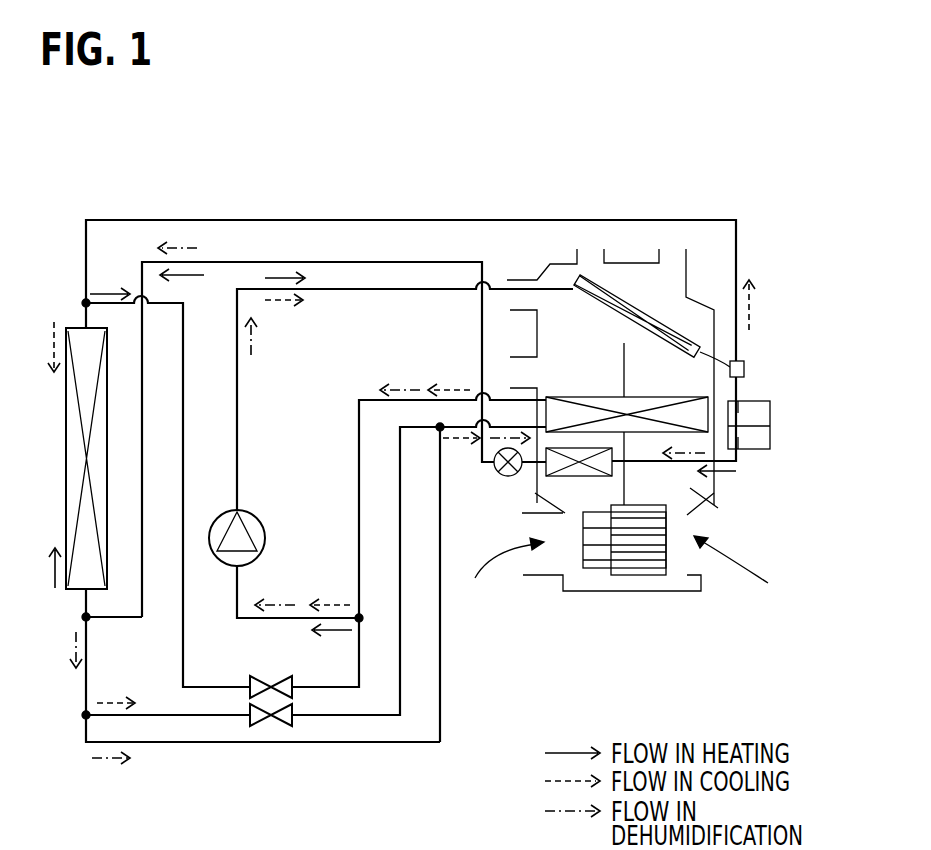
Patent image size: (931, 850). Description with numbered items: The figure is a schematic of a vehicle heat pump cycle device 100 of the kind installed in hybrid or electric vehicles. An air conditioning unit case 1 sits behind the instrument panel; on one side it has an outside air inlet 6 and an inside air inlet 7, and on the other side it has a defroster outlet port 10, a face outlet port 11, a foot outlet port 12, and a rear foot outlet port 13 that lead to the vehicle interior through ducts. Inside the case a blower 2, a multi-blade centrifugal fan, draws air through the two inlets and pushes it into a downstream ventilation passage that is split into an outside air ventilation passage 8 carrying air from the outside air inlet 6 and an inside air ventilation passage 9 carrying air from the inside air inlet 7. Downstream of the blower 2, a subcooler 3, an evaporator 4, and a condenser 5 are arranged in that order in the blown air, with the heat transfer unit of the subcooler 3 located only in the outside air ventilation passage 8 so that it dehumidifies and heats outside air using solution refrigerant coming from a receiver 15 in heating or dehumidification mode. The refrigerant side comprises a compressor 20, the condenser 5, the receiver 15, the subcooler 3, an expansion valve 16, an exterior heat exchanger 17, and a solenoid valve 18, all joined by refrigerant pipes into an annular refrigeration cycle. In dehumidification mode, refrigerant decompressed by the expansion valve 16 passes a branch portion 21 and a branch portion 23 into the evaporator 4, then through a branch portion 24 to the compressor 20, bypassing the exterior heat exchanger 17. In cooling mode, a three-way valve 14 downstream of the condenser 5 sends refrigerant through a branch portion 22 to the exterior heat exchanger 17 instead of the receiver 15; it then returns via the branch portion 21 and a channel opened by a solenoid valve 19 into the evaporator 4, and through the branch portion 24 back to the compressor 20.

The heat pump cycle device 100 is at (424, 216).
The air conditioning unit case 1 is at (626, 603).
The blower 2 is at (652, 577).
The subcooler 3 is at (563, 477).
The evaporator 4 is at (708, 405).
The condenser 5 is at (668, 326).
The outside air inlet 6 is at (530, 560).
The inside air inlet 7 is at (693, 558).
The outside air ventilation passage 8 is at (533, 499).
The inside air ventilation passage 9 is at (718, 508).
The defroster outlet port 10 is at (513, 373).
The face outlet port 11 is at (507, 280).
The foot outlet port 12 is at (592, 244).
The rear foot outlet port 13 is at (674, 244).
The three-way valve 14 is at (745, 369).
The receiver 15 is at (770, 436).
The expansion valve 16 is at (496, 472).
The exterior heat exchanger 17 is at (66, 405).
The solenoid valve 18 is at (250, 680).
The solenoid valve 19 is at (292, 724).
The compressor 20 is at (266, 533).
The branch portion 21 is at (84, 617).
The branch portion 22 is at (84, 303).
The branch portion 23 is at (84, 714).
The branch portion 24 is at (361, 620).